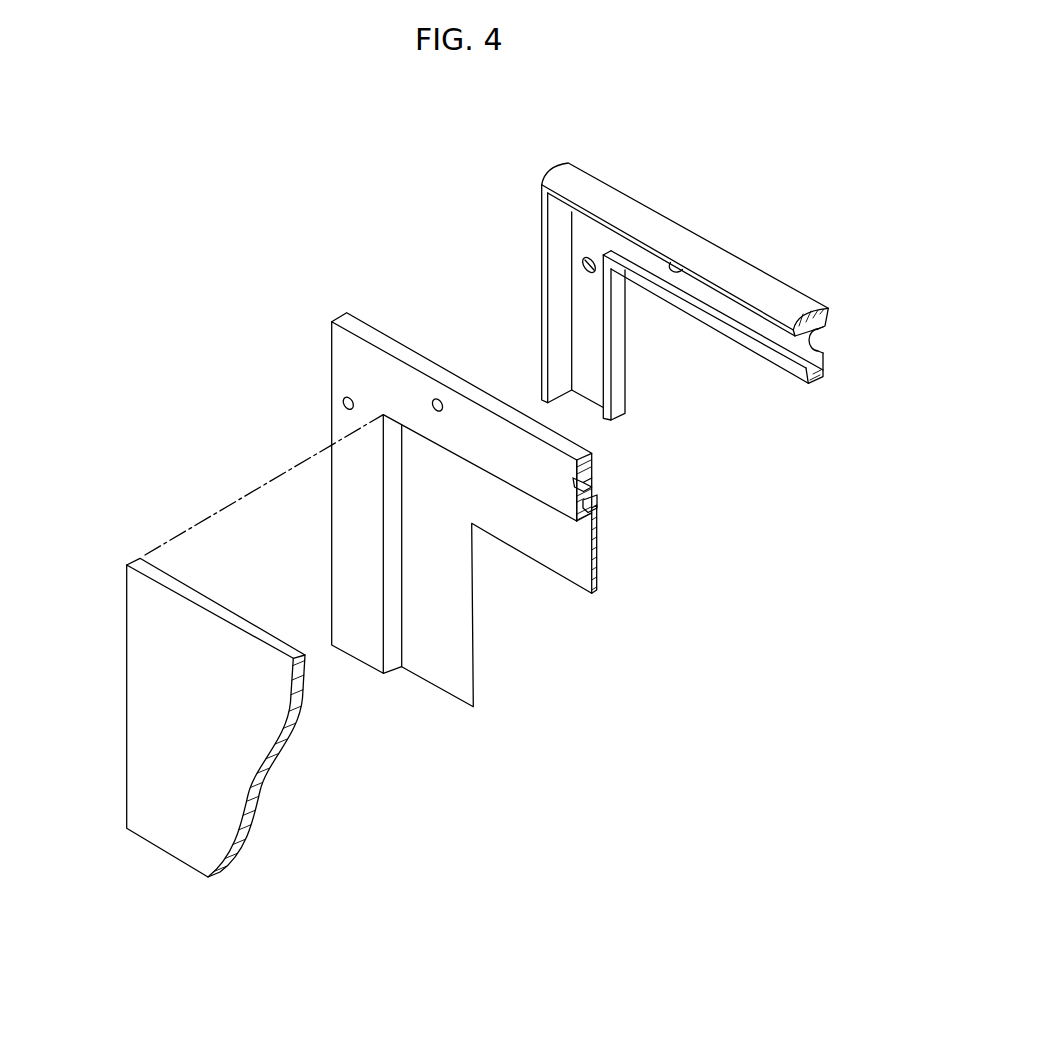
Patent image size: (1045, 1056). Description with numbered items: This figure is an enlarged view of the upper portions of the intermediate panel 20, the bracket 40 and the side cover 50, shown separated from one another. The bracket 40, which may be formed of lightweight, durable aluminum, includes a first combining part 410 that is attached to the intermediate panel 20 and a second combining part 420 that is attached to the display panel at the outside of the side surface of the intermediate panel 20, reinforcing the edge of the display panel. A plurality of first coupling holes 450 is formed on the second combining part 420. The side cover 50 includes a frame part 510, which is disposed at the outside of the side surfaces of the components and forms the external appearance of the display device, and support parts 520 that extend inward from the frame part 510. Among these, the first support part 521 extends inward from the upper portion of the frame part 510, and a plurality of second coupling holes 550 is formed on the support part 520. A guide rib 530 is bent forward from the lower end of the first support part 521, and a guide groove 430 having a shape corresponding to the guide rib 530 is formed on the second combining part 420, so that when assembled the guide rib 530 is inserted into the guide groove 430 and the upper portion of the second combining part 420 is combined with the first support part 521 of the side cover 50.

The intermediate panel 20 is at (105, 621).
The bracket 40 is at (456, 497).
The first combining part 410 is at (558, 558).
The second combining part 420 is at (477, 423).
The guide groove 430 is at (598, 502).
The first coupling holes 450 is at (439, 400).
The side cover 50 is at (699, 290).
The frame part 510 is at (798, 302).
The support parts 520 is at (869, 331).
The first support part 521 is at (822, 341).
The guide rib 530 is at (793, 373).
The second coupling holes 550 is at (583, 268).